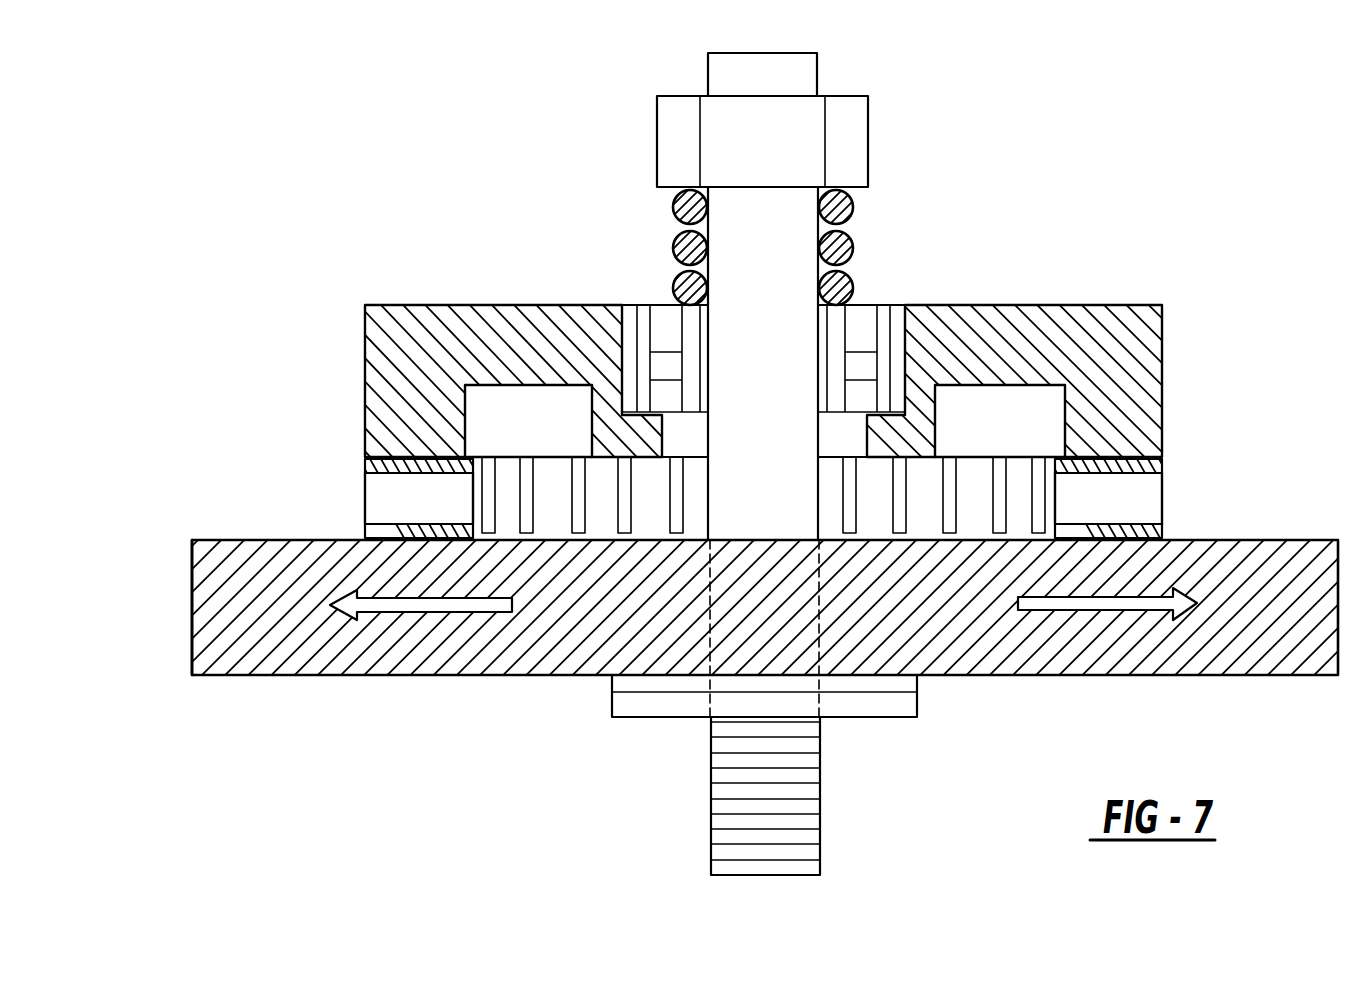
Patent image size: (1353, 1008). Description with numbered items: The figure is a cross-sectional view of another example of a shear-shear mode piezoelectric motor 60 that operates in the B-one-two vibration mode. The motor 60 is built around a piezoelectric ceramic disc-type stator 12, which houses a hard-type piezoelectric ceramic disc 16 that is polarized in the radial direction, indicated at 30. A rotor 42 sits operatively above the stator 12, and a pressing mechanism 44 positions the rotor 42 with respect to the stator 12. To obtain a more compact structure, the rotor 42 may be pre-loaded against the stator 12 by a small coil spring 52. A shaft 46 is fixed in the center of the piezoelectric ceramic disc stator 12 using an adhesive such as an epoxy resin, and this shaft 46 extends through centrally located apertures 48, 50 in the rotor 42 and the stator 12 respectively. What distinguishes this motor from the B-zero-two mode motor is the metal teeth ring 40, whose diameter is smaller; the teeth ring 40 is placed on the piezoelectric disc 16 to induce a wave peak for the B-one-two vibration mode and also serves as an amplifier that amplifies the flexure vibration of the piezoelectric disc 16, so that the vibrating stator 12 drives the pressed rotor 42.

The shear-shear mode motor 60 is at (946, 127).
The pressing mechanism 44 is at (859, 207).
The coil spring 52 is at (836, 250).
The centrally located aperture 48 is at (818, 365).
The rotor 42 is at (512, 305).
The metal teeth ring 40 is at (472, 497).
The shaft 46 is at (740, 495).
The piezoelectric ceramic disc 16 is at (192, 640).
The stator 12 is at (158, 597).
The centrally located aperture 50 is at (820, 620).
The radial polarization direction 30 is at (417, 612).